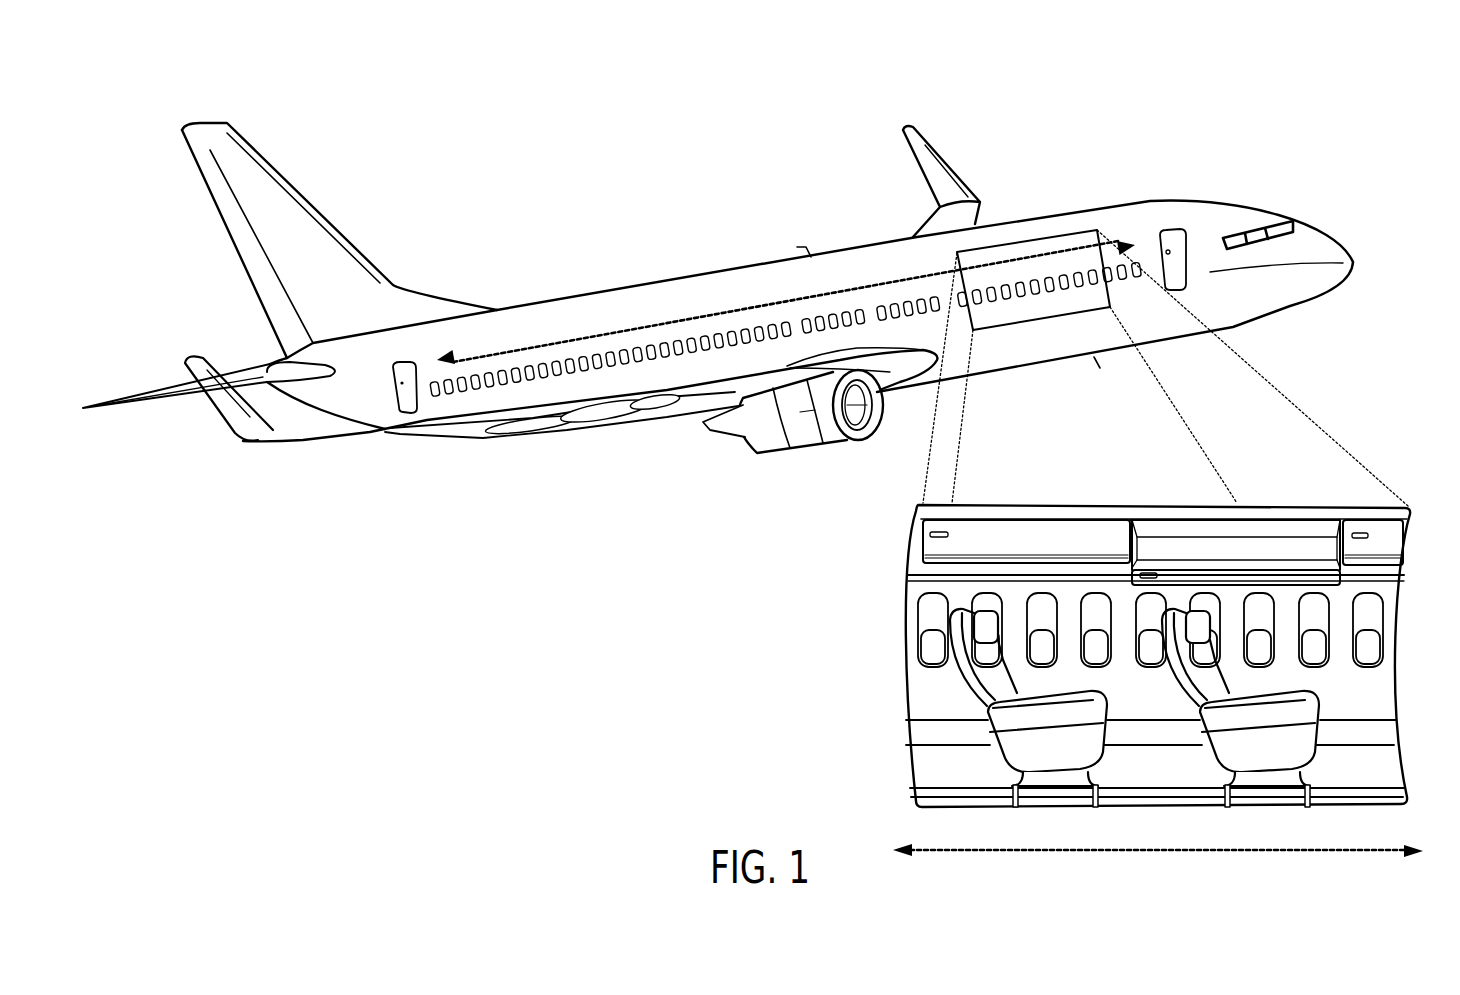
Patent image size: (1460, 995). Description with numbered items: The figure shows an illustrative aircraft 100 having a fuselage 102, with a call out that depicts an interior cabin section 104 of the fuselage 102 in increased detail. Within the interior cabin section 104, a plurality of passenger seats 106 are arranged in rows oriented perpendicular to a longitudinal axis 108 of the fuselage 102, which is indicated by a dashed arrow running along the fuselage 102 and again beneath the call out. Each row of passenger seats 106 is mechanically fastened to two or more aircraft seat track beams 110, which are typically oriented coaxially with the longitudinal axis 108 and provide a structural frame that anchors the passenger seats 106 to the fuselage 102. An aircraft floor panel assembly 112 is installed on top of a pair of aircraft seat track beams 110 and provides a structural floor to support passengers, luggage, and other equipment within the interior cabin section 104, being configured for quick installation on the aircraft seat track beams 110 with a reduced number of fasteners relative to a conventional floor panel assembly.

The aircraft 100 is at (1280, 312).
The fuselage 102 is at (682, 298).
The interior cabin section 104 is at (1028, 246).
The passenger seats 106 is at (1330, 701).
The longitudinal axis 108 is at (737, 310).
The aircraft seat track beams 110 is at (1380, 802).
The aircraft floor panel assembly 112 is at (1362, 797).